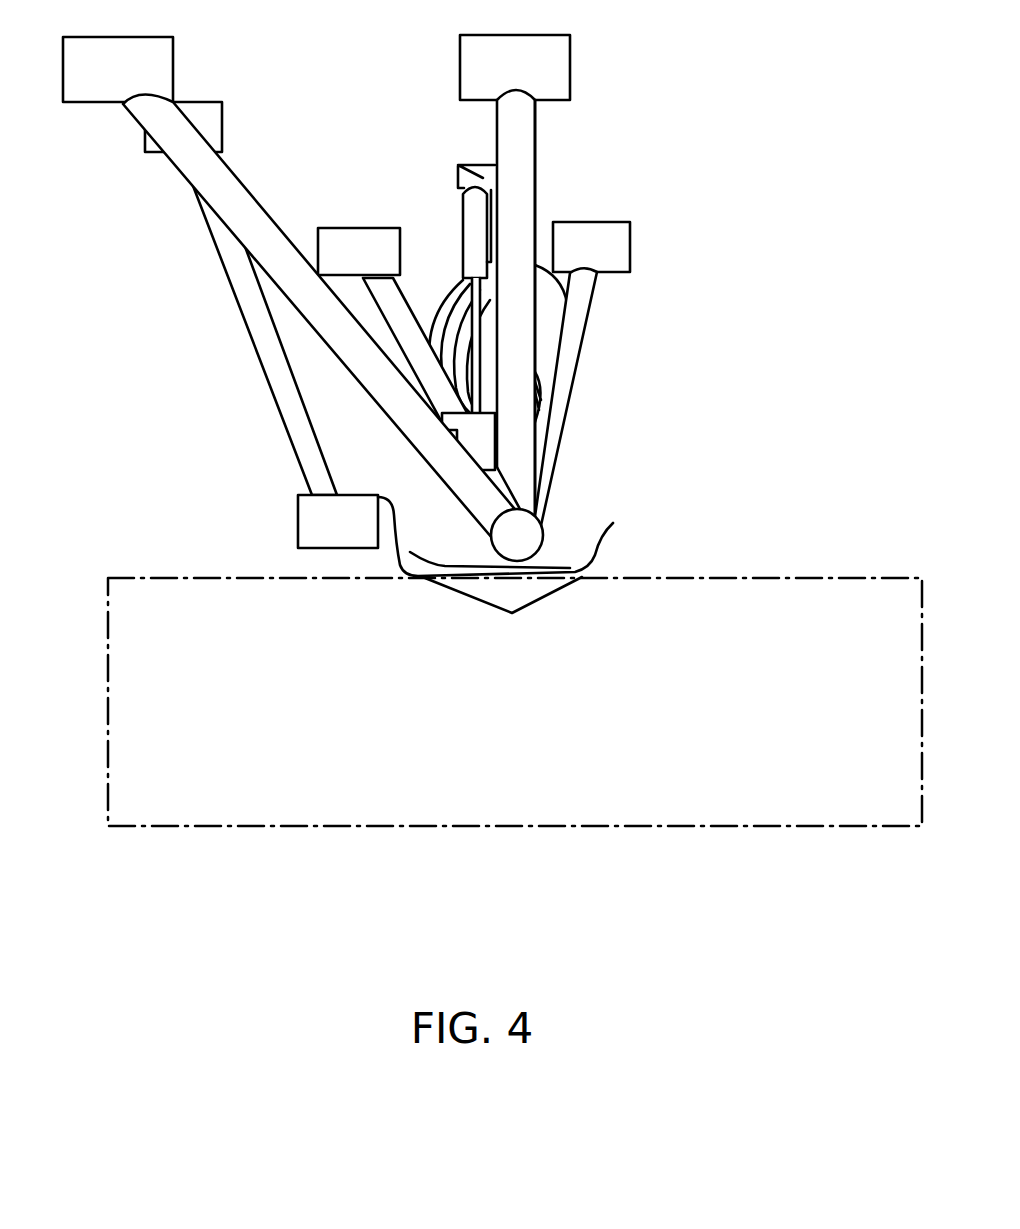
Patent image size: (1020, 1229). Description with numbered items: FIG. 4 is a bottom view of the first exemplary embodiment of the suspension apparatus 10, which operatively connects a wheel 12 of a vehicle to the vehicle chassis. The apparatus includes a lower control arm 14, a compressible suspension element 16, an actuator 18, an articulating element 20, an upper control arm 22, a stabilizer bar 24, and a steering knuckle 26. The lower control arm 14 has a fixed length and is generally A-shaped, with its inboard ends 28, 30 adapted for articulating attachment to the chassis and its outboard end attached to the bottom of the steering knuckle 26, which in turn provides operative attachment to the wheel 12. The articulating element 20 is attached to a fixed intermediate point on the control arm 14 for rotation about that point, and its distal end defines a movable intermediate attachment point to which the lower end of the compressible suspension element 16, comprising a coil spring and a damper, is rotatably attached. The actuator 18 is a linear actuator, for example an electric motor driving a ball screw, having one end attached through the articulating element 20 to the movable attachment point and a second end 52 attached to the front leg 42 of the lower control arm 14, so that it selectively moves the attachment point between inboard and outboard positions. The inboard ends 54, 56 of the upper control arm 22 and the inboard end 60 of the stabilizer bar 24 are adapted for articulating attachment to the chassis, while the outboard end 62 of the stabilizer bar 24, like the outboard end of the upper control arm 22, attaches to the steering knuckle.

The suspension apparatus 10 is at (752, 232).
The wheel 12 is at (827, 578).
The lower control arm 14 is at (523, 130).
The compressible suspension element 16 is at (551, 307).
The actuator 18 is at (475, 215).
The articulating element 20 is at (483, 437).
The upper control arm 22 is at (565, 375).
The stabilizer bar 24 is at (262, 352).
The steering knuckle 26 is at (583, 567).
The inboard end 28 is at (558, 63).
The inboard end 30 is at (150, 66).
The front leg 42 is at (525, 186).
The second end 52 is at (482, 177).
The inboard end 54 is at (615, 240).
The inboard end 56 is at (333, 230).
The inboard end 60 is at (208, 127).
The outboard end 62 is at (312, 518).